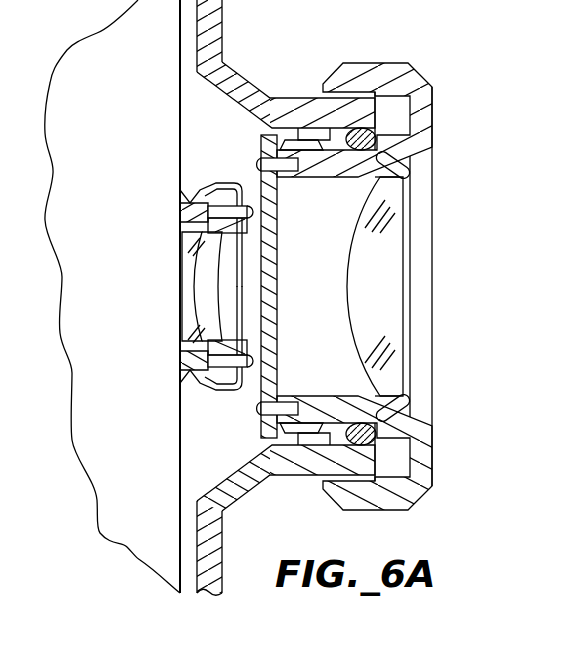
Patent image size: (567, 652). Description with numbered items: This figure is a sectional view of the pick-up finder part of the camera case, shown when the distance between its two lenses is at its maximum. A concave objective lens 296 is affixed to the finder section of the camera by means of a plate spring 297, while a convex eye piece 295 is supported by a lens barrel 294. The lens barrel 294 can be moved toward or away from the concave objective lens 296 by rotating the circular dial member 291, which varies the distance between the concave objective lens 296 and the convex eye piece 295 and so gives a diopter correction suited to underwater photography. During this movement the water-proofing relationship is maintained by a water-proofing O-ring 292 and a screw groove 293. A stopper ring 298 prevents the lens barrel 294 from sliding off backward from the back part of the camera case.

The dial member 291 is at (411, 72).
The water-proofing O-ring 292 is at (361, 127).
The screw groove 293 is at (313, 140).
The lens barrel 294 is at (427, 125).
The convex eye piece 295 is at (373, 310).
The concave objective lens 296 is at (203, 267).
The plate spring 297 is at (220, 301).
The stopper ring 298 is at (266, 148).